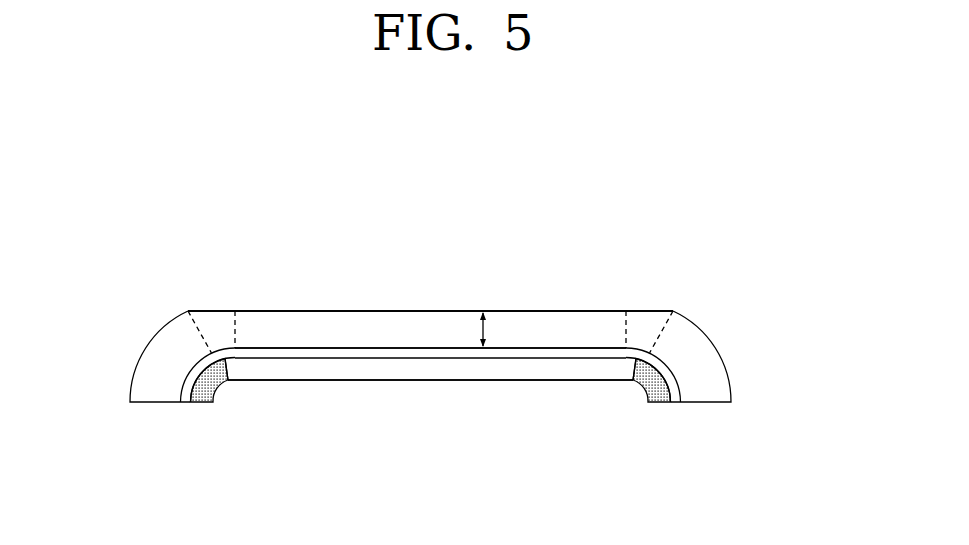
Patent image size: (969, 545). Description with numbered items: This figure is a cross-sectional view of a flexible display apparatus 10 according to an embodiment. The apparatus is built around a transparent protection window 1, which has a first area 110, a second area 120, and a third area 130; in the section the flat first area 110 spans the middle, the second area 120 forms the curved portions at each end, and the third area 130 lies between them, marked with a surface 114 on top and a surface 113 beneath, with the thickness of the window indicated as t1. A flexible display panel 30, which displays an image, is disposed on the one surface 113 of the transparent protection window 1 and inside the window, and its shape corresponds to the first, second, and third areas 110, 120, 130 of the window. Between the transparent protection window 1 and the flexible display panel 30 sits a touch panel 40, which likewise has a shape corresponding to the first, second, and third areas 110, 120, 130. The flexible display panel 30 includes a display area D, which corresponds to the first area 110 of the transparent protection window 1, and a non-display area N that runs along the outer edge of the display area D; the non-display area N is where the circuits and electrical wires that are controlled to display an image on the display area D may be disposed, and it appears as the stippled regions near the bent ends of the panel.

The flexible display apparatus 10 is at (738, 232).
The transparent protection window 1 is at (445, 307).
The first area 110 is at (328, 320).
The one surface 113 is at (400, 345).
The upper surface of window 114 is at (549, 311).
The second area 120 is at (140, 385).
The third area 130 is at (218, 320).
The flexible display panel 30 is at (434, 384).
The touch panel 40 is at (492, 354).
The display area D is at (328, 372).
The non-display area N is at (202, 403).
The thickness of window t1 is at (494, 329).